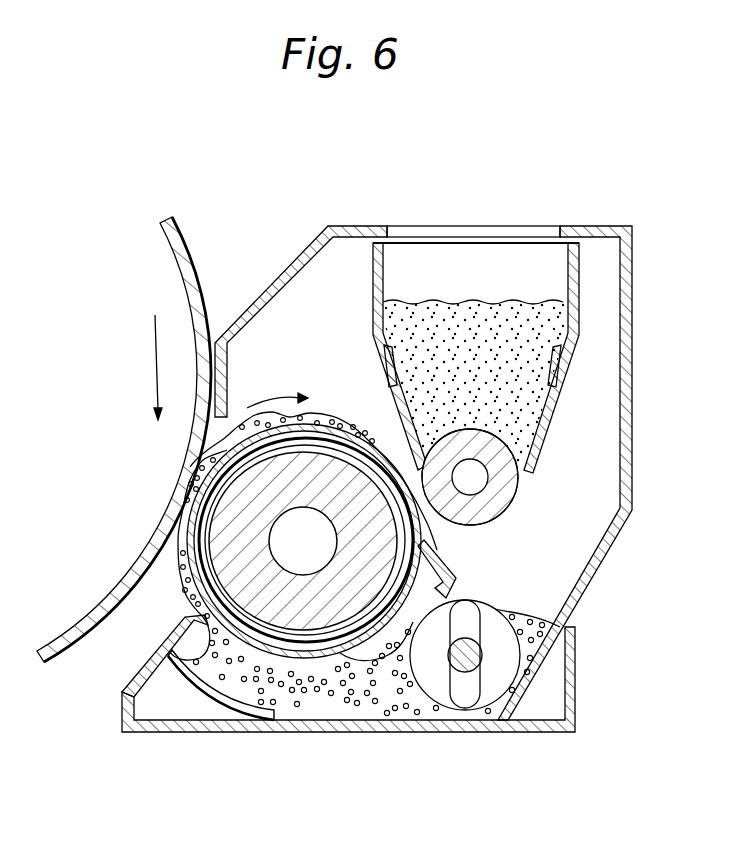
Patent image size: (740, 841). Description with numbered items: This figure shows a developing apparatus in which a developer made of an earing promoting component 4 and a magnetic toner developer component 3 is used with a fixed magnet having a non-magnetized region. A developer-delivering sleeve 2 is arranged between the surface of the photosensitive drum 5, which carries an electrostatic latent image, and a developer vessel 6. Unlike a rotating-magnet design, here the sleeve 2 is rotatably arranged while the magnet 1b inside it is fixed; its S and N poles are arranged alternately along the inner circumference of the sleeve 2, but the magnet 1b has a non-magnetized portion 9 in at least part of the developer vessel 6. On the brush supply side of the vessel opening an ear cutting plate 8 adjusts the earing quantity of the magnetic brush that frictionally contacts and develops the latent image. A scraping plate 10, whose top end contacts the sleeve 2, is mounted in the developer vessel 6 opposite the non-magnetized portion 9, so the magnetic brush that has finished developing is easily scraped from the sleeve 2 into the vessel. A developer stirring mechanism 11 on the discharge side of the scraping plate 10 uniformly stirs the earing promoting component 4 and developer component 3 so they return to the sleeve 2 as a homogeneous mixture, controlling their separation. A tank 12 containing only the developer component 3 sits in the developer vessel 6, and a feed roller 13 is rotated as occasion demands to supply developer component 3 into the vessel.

The magnet 1b is at (316, 625).
The developer-delivering sleeve 2 is at (301, 428).
The developer component 3 is at (288, 705).
The earing promoting component 4 is at (228, 700).
The photosensitive drum 5 is at (181, 232).
The developer vessel 6 is at (631, 502).
The ear cutting plate 8 is at (162, 640).
The non-magnetized portion 9 is at (378, 607).
The scraping plate 10 is at (447, 568).
The developer stirring mechanism 11 is at (492, 693).
The tank 12 is at (580, 308).
The feed roller 13 is at (513, 481).